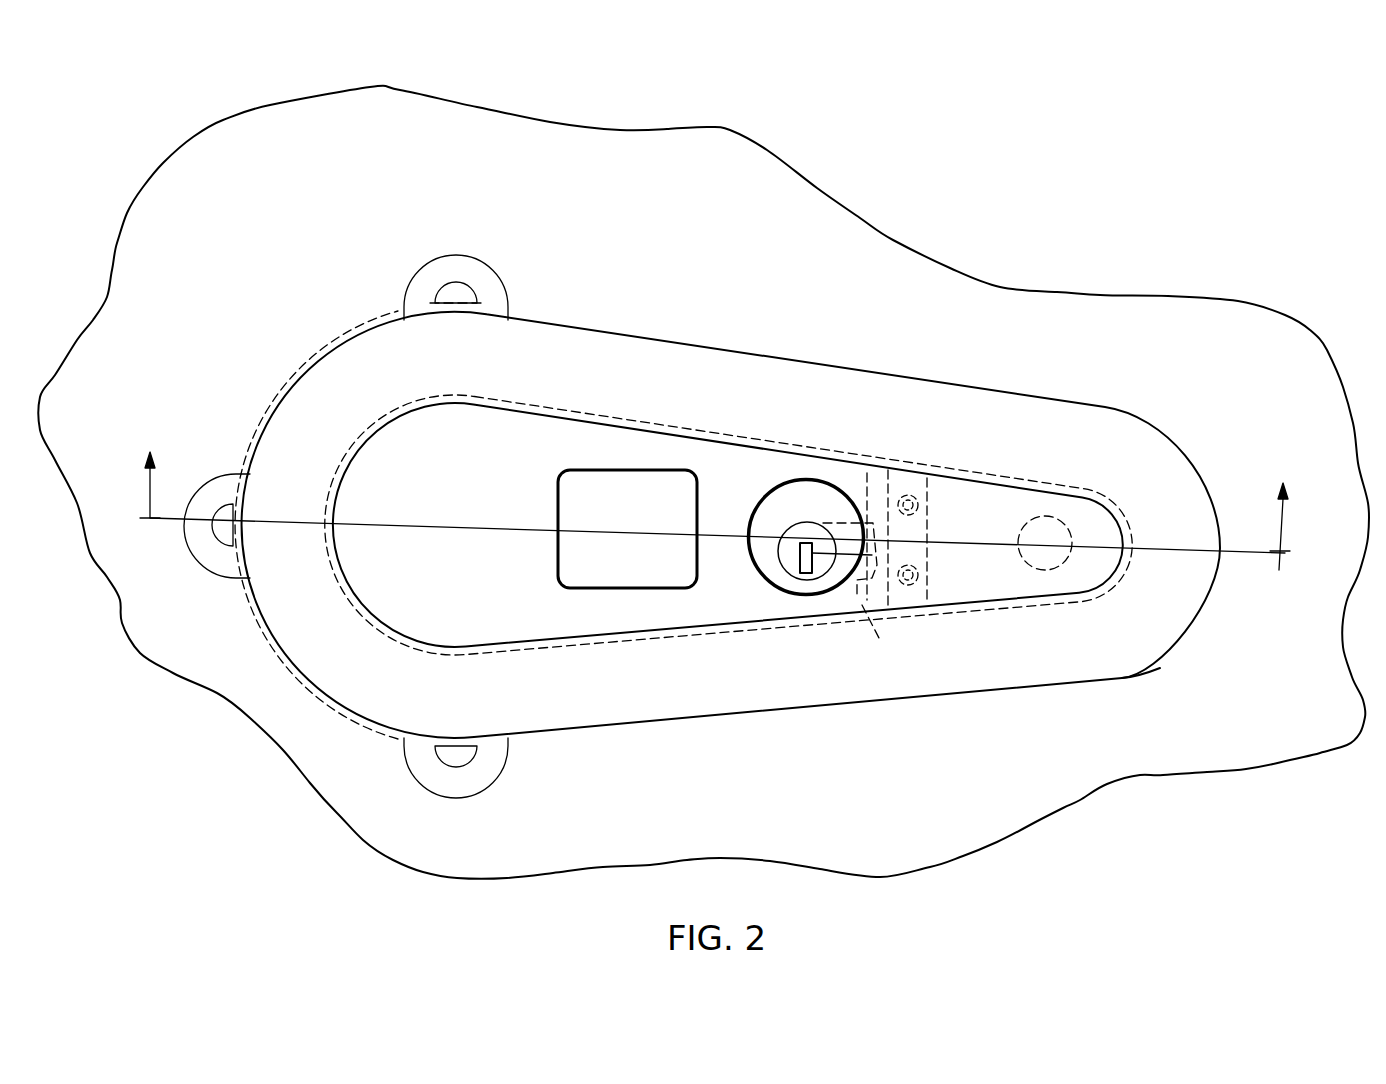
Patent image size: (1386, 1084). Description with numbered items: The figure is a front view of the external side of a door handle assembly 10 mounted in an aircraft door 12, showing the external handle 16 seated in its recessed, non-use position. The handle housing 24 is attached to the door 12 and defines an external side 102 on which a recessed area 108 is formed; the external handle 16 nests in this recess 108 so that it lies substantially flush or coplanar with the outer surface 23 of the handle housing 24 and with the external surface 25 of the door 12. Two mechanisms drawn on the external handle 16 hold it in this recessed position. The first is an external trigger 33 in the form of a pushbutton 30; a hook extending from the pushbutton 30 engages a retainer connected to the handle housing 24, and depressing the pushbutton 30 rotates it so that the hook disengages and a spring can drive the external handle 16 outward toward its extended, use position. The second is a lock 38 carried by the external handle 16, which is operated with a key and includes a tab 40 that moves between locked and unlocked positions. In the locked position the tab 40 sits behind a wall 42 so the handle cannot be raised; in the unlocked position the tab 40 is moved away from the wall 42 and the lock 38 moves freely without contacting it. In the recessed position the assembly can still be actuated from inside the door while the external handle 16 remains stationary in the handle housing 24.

The door handle assembly 10 is at (715, 521).
The aircraft door 12 is at (1056, 793).
The external handle 16 is at (537, 620).
The outer surface 23 is at (602, 613).
The handle housing 24 is at (1143, 682).
The external surface 25 is at (1137, 752).
The pushbutton 30 is at (663, 492).
The external trigger 33 is at (636, 456).
The lock 38 is at (804, 592).
The tab 40 is at (880, 640).
The wall 42 is at (885, 600).
The external side 102 is at (1160, 624).
The recessed area 108 is at (390, 430).